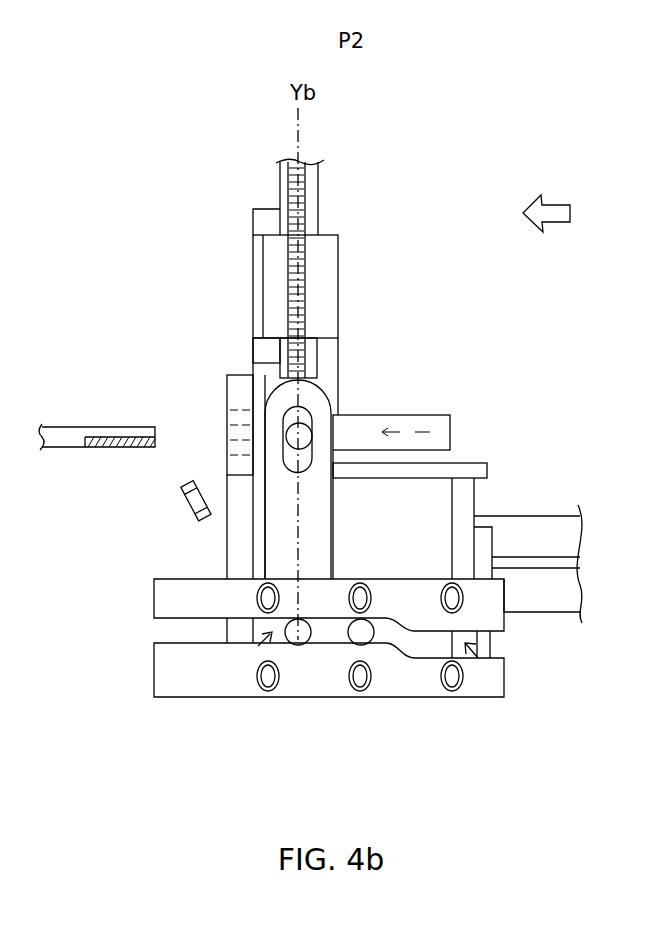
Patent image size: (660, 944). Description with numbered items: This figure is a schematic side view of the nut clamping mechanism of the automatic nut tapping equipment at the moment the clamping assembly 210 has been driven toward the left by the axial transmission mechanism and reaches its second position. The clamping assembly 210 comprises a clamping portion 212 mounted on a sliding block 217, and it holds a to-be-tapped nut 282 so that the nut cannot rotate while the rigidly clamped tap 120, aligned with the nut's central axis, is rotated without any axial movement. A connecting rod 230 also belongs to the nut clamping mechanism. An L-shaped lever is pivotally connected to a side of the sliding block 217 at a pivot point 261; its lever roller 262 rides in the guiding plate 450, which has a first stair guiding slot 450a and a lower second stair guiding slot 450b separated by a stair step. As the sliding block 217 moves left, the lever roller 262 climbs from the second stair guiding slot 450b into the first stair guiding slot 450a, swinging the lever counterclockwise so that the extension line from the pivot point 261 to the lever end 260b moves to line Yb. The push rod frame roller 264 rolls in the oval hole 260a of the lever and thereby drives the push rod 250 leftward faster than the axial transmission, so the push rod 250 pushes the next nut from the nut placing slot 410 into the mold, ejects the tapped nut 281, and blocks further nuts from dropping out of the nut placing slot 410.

The nut placing slot 410 is at (286, 160).
The clamping assembly 210 is at (250, 368).
The clamping portion 212 is at (248, 371).
The oval hole 260a is at (284, 423).
The end of the L-shaped lever 260b is at (302, 378).
The push rod frame roller 264 is at (305, 428).
The tap 120 is at (155, 427).
The to-be-tapped nut 282 is at (220, 405).
The tapped nut 281 is at (178, 481).
The push rod 250 is at (416, 414).
The sliding block 217 is at (428, 492).
The connecting rod 230 is at (538, 527).
The guiding plate 450 is at (482, 692).
The first stair guiding slot 450a is at (258, 647).
The second stair guiding slot 450b is at (479, 656).
The pivot point 261 is at (294, 646).
The lever roller 262 is at (366, 646).